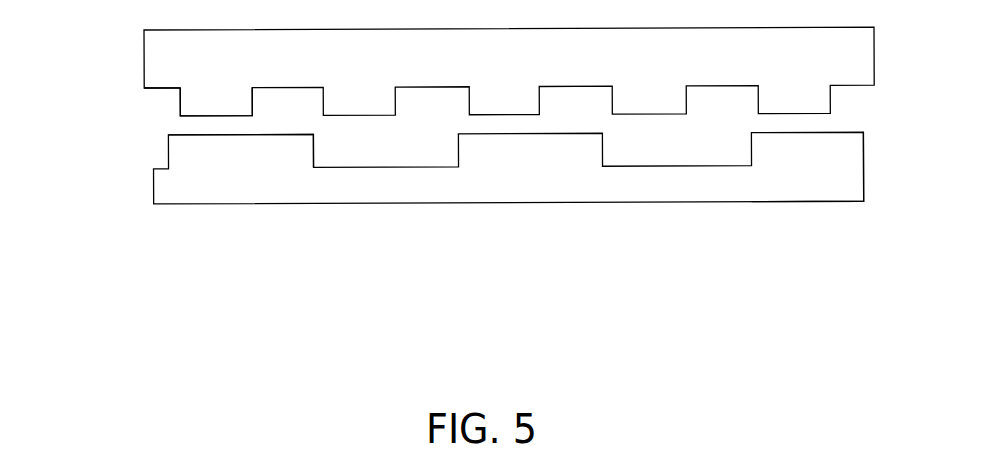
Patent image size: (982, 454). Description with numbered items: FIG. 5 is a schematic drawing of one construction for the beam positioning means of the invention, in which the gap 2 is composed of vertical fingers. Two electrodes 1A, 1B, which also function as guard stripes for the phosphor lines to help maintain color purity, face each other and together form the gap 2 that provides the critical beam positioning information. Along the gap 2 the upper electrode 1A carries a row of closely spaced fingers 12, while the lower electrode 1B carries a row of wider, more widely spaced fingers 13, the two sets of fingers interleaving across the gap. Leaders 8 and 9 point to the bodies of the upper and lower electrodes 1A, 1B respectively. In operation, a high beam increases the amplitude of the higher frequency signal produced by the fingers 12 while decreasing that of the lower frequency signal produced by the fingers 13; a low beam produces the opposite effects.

The electrode 1A is at (480, 73).
The electrode 1B is at (532, 183).
The gap 2 is at (126, 135).
The flange of upper member 8 is at (163, 61).
The base of lower member 9 is at (833, 176).
The fingers 12 is at (232, 103).
The fingers 13 is at (288, 160).